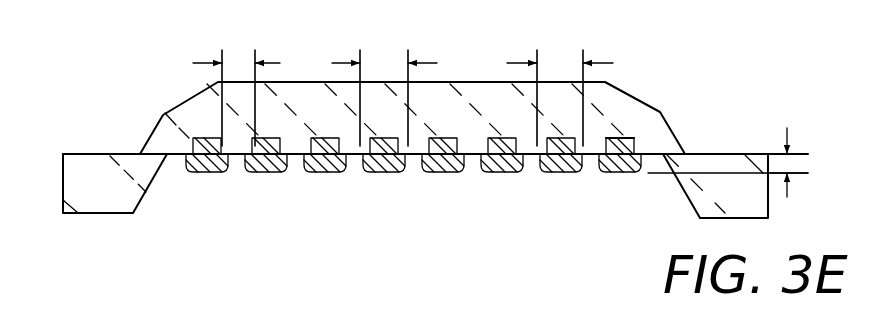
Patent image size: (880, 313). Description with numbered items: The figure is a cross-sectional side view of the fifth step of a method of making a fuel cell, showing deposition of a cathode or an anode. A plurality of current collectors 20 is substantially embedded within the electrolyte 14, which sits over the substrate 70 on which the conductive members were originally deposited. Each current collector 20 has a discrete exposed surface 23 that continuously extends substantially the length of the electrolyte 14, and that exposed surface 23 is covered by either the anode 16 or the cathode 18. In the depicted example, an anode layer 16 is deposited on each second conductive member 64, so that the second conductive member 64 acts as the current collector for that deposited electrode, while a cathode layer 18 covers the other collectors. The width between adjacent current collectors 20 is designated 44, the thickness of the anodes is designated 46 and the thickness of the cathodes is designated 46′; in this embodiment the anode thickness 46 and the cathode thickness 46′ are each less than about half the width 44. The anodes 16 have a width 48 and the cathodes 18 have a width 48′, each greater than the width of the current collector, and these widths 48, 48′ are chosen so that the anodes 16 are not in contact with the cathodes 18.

The electrolyte 14 is at (617, 100).
The anode 16 is at (265, 173).
The cathode 18 is at (203, 173).
The current collector 20 is at (382, 145).
The exposed surface 23 is at (442, 173).
The width between adjacent current collectors 44 is at (212, 62).
The anode width 48 is at (352, 62).
The cathode width 48′ is at (530, 62).
The anode thickness 46 is at (787, 127).
The cathode thickness 46′ is at (787, 197).
The second conductive member 64 is at (618, 136).
The substrate 70 is at (98, 215).